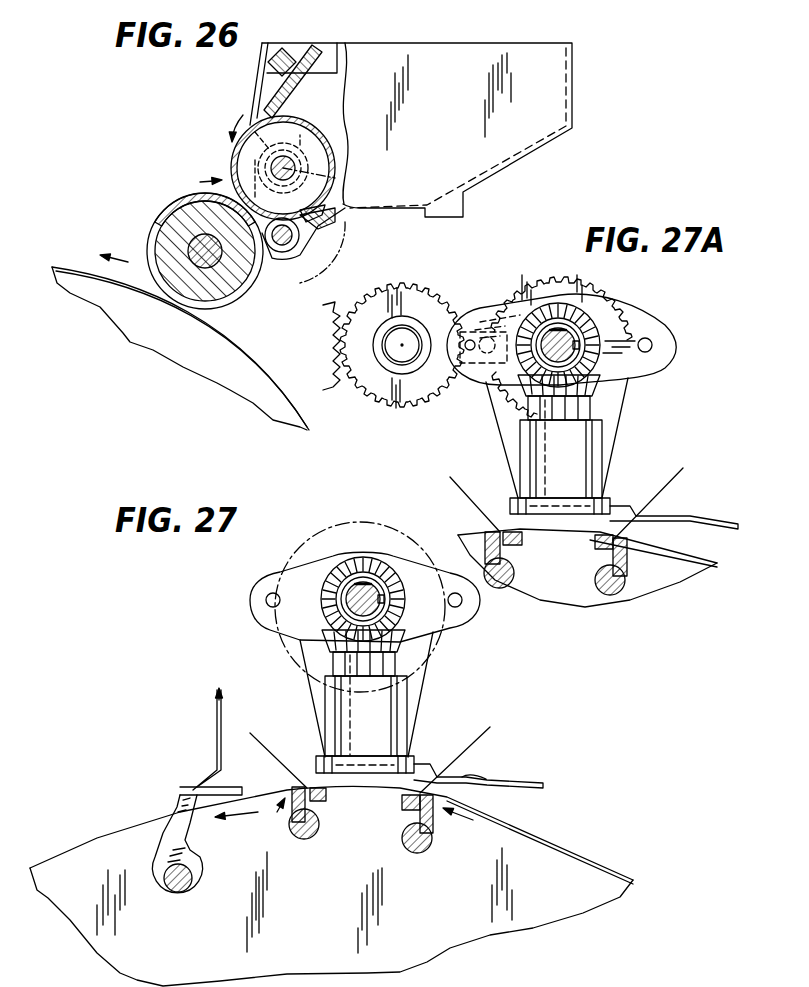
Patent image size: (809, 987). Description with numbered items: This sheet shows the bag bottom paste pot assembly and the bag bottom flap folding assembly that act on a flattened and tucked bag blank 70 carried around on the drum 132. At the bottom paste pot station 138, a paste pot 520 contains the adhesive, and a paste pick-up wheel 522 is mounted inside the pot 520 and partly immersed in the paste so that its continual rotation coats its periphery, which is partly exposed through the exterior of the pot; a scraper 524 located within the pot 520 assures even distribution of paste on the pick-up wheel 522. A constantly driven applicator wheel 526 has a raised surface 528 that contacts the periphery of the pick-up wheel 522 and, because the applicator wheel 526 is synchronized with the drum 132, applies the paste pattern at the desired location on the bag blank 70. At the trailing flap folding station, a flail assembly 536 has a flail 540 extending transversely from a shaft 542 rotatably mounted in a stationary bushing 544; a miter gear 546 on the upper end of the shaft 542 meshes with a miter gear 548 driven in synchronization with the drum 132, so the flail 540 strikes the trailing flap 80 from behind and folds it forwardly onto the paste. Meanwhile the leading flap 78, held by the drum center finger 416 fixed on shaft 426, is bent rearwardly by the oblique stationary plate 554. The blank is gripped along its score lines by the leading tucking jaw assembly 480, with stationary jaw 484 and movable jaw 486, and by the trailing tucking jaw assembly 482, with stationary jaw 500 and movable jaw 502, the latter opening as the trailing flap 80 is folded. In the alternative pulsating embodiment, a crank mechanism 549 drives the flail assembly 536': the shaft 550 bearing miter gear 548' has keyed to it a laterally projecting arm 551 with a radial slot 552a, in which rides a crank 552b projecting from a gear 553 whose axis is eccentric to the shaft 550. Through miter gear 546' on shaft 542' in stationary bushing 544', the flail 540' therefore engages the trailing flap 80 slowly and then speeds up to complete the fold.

In FIG. 26, the bottom paste pot station 138 is at (558, 42).
In FIG. 26, the paste pot 520 is at (500, 170).
In FIG. 26, the paste pick-up wheel 522 is at (236, 164).
In FIG. 26, the scraper 524 is at (280, 98).
In FIG. 26, the applicator wheel 526 is at (147, 248).
In FIG. 26, the raised surface 528 is at (160, 218).
In FIG. 26, the drum 132 is at (146, 352).
In FIG. 27, the drum 132 is at (100, 841).
In FIG. 26, the bag blank 70 is at (235, 344).
In FIG. 27, the bag blank 70 is at (573, 848).
In FIG. 27A, the crank mechanism 549 is at (471, 300).
In FIG. 27A, the laterally projecting arm 551 is at (520, 280).
In FIG. 27A, the gear 553 is at (575, 280).
In FIG. 27A, the shaft 550 is at (586, 337).
In FIG. 27A, the miter gear 548' is at (575, 339).
In FIG. 27A, the miter gear 546' is at (602, 388).
In FIG. 27A, the flail assembly 536' is at (606, 438).
In FIG. 27A, the shaft 542' is at (594, 447).
In FIG. 27A, the stationary bushing 544' is at (584, 467).
In FIG. 27A, the flail 540' is at (674, 514).
In FIG. 27A, the radial slot 552a is at (456, 377).
In FIG. 27A, the crank 552b is at (488, 392).
In FIG. 27, the miter gear 548 is at (358, 607).
In FIG. 27, the miter gear 546 is at (382, 632).
In FIG. 27, the shaft 542 is at (398, 703).
In FIG. 27, the stationary bushing 544 is at (391, 724).
In FIG. 27, the flail assembly 536 is at (433, 657).
In FIG. 27, the flail 540 is at (490, 773).
In FIG. 27, the trailing flap 80 is at (478, 744).
In FIG. 27, the leading flap 78 is at (276, 762).
In FIG. 27, the stationary plate 554 is at (216, 740).
In FIG. 27, the drum center finger 416 is at (186, 800).
In FIG. 27, the shaft 426 is at (193, 886).
In FIG. 27, the stationary jaw 484 is at (326, 798).
In FIG. 27, the movable jaw 486 is at (314, 820).
In FIG. 27, the stationary jaw 500 is at (404, 808).
In FIG. 27, the movable jaw 502 is at (432, 840).
In FIG. 27, the leading tucking jaw assembly 480 is at (250, 818).
In FIG. 27, the trailing tucking jaw assembly 482 is at (478, 824).